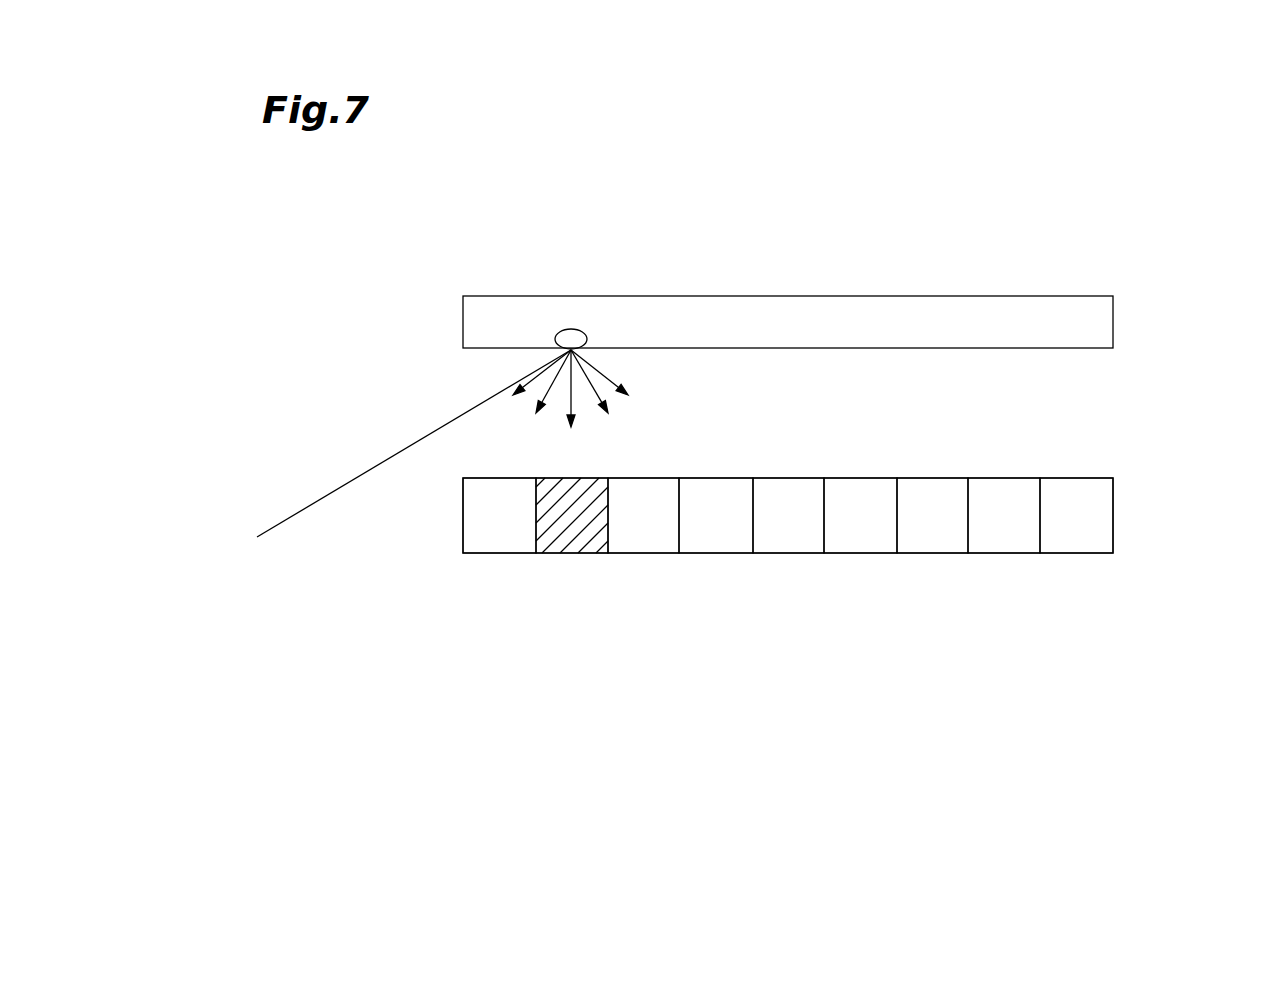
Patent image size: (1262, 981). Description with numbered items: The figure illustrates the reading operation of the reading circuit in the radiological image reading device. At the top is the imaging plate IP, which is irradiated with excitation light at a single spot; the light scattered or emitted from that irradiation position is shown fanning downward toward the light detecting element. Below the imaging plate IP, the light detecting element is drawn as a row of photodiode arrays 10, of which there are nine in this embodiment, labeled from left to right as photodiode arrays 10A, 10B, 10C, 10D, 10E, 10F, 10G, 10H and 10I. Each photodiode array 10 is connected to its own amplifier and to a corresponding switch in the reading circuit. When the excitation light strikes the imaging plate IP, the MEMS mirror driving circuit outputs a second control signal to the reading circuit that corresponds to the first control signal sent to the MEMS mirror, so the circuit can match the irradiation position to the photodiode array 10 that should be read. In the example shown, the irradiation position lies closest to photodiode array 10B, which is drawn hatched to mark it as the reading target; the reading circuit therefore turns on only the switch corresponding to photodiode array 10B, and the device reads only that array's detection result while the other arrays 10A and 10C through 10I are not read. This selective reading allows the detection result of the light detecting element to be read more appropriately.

The imaging plate IP is at (1035, 296).
The photodiode array 10 is at (837, 545).
The photodiode array 10A is at (513, 553).
The photodiode array 10B is at (587, 553).
The photodiode array 10C is at (656, 553).
The photodiode array 10D is at (728, 553).
The photodiode array 10E is at (799, 553).
The photodiode array 10F is at (871, 553).
The photodiode array 10G is at (944, 553).
The photodiode array 10H is at (1017, 553).
The photodiode array 10I is at (1083, 553).